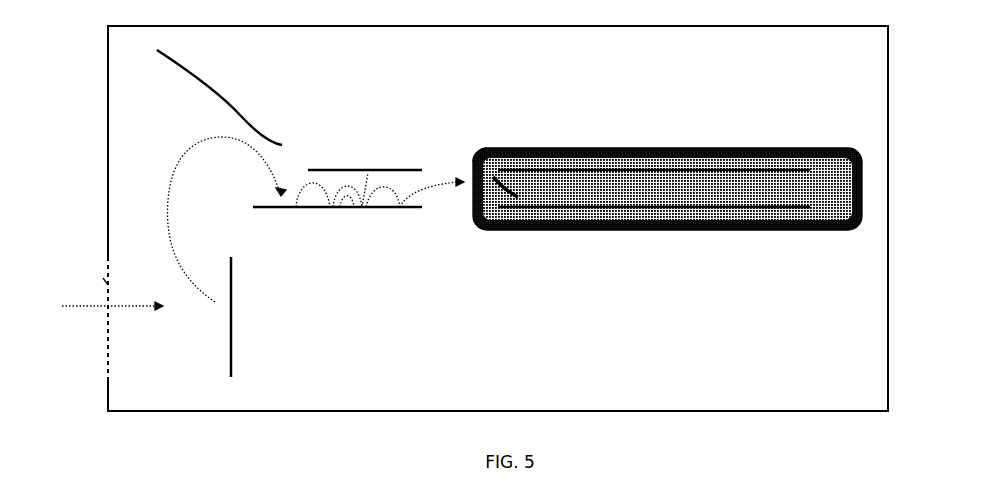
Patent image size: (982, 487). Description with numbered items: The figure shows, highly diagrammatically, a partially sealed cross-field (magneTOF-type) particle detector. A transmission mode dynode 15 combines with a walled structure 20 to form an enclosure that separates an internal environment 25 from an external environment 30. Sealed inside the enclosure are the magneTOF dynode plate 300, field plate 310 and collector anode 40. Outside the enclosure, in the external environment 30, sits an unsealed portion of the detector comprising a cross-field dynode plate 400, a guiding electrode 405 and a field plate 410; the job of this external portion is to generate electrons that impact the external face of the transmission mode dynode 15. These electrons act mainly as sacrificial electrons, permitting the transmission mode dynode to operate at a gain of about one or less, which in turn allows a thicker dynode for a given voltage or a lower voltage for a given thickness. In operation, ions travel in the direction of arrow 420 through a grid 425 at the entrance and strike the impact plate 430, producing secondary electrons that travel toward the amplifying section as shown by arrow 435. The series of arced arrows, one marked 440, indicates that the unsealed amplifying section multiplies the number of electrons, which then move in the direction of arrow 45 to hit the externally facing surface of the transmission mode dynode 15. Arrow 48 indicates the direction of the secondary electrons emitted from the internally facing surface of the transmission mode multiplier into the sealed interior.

The transmission mode dynode 15 is at (471, 160).
The walled structure 20 is at (648, 227).
The internal environment 25 is at (585, 197).
The external environment 30 is at (782, 96).
The collector anode 40 is at (830, 190).
The arrow indicating direction of amplified electrons 45 is at (445, 184).
The arrow indicating direction of secondary electrons 48 is at (500, 172).
The dynode plate 300 is at (770, 195).
The field plate 310 is at (730, 170).
The dynode plate 400 is at (345, 192).
The guiding electrode 405 is at (208, 82).
The field plate 410 is at (368, 173).
The arrow indicating direction of ion travel 420 is at (140, 307).
The grid 425 is at (103, 278).
The impact plate 430 is at (231, 333).
The arrow indicating travel of secondary electrons 435 is at (173, 168).
The arced arrows 440 is at (318, 170).